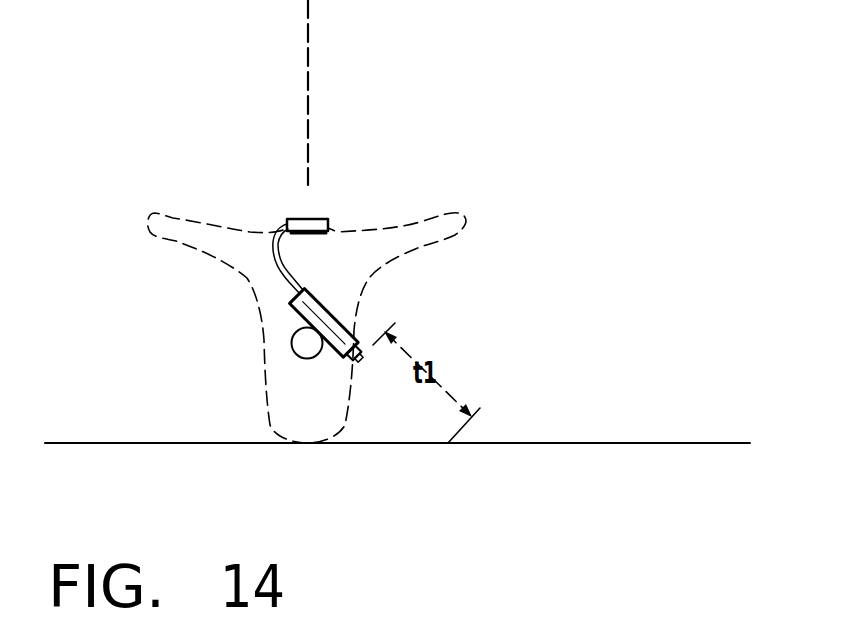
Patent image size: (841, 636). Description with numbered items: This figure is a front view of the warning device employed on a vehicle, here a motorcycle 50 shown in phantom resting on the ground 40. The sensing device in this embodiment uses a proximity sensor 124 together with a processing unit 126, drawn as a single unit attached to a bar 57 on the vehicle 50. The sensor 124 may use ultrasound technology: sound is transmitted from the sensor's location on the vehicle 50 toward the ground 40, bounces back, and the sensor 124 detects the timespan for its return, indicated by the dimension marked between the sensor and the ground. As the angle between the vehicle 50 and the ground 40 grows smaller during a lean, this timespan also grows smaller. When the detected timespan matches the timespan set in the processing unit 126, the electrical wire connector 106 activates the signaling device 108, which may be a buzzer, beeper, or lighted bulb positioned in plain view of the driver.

The ground 40 is at (107, 443).
The motorcycle 50 is at (247, 278).
The bar 57 is at (292, 343).
The electrical wire connector 106 is at (268, 253).
The signaling device 108 is at (330, 225).
The proximity sensor 124 is at (421, 313).
The processing unit 126 is at (337, 320).